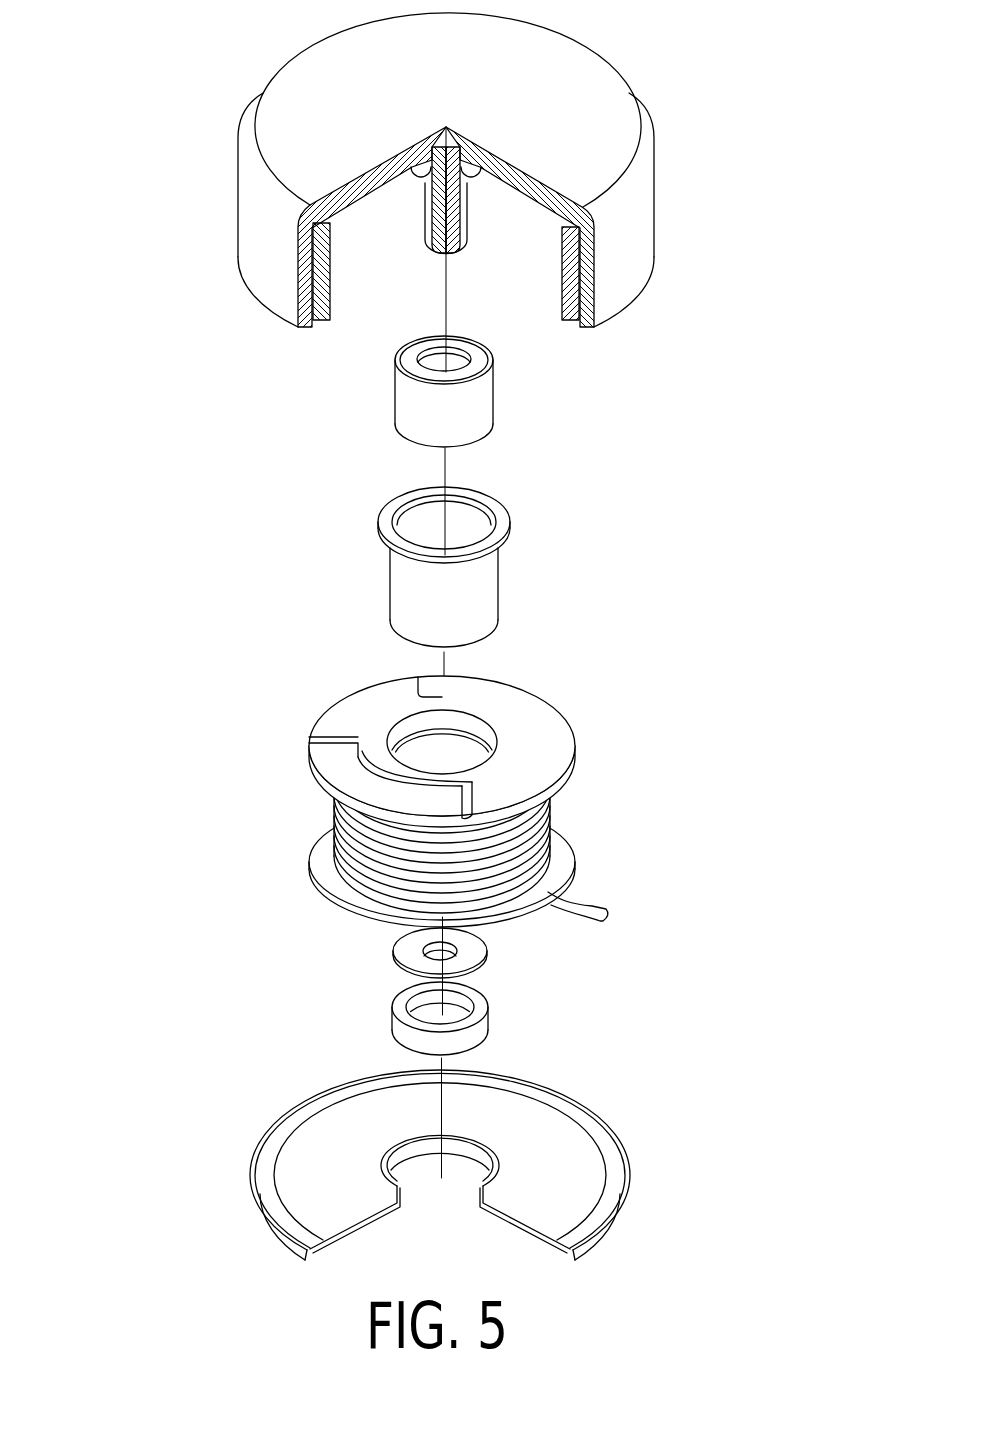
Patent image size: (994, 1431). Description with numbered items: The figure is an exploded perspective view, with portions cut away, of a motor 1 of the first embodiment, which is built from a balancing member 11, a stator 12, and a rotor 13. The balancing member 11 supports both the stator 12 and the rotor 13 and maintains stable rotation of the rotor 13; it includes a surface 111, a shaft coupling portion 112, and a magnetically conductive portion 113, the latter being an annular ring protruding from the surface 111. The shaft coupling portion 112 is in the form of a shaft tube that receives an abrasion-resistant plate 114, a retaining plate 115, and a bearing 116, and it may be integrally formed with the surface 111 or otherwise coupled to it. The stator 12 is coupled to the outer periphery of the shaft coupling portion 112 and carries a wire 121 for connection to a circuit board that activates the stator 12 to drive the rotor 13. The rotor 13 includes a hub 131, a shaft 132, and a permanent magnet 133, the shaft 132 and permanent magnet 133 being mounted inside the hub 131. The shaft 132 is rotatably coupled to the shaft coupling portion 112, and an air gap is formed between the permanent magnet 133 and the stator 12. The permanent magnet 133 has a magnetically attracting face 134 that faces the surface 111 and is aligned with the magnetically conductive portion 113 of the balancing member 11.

The motor 1 is at (213, 128).
The balancing member 11 is at (392, 1116).
The surface 111 is at (340, 1135).
The shaft coupling portion 112 is at (493, 593).
The magnetically conductive portion 113 is at (267, 1175).
The abrasion-resistant plate 114 is at (477, 1032).
The retaining plate 115 is at (480, 947).
The bearing 116 is at (485, 405).
The stator 12 is at (500, 801).
The wire 121 is at (592, 902).
The rotor 13 is at (446, 208).
The hub 131 is at (618, 285).
The shaft 132 is at (467, 217).
The permanent magnet 133 is at (298, 281).
The magnetically attracting face 134 is at (318, 330).